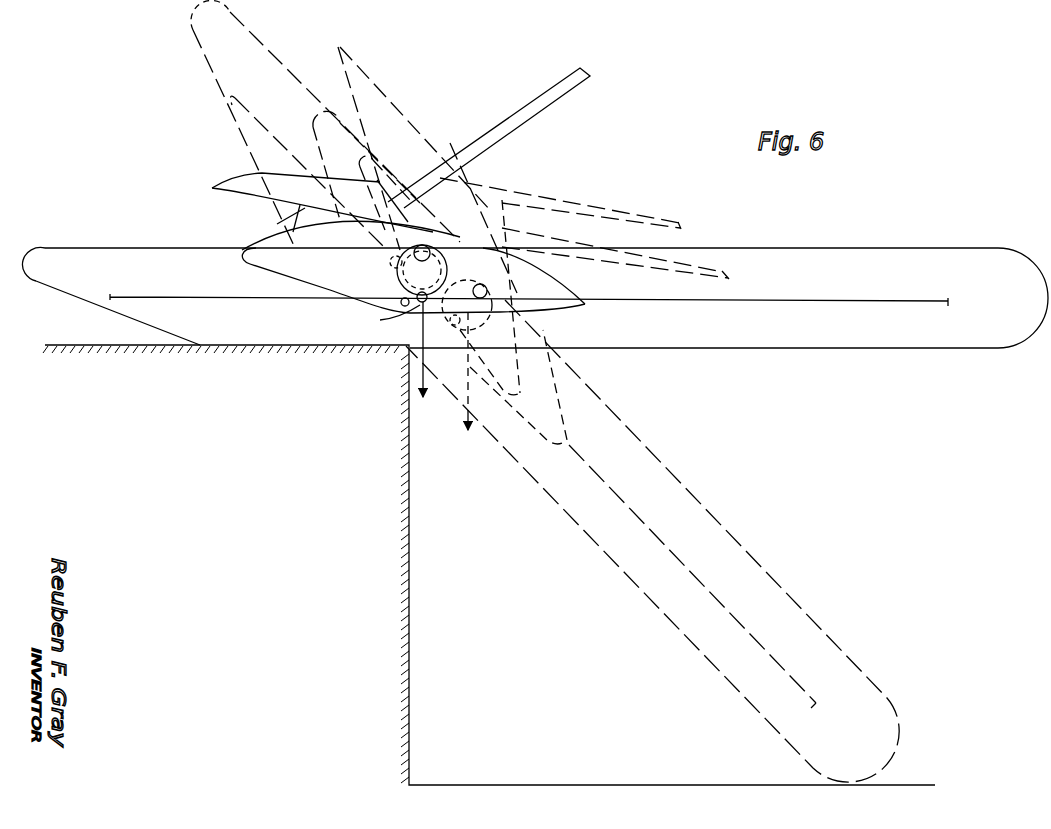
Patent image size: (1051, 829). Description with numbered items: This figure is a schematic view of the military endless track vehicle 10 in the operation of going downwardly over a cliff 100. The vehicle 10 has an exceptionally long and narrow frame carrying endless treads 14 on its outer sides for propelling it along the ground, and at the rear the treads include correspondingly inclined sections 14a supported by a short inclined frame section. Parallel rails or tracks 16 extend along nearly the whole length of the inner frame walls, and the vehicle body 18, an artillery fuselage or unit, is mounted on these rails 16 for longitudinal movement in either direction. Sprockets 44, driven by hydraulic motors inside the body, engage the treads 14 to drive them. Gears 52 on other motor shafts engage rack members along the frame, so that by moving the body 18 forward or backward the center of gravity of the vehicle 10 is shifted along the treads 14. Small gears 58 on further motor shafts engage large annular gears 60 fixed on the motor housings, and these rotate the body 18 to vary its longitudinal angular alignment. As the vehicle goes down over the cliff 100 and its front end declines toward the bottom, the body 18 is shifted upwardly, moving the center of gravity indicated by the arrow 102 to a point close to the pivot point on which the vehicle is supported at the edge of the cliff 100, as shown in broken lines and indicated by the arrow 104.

The military endless track vehicle 10 is at (868, 352).
The endless treads 14 is at (775, 247).
The inclined sections of the treads 14a is at (86, 300).
The rails or tracks 16 is at (805, 301).
The vehicle body 18 is at (323, 283).
The sprockets 44 is at (392, 265).
The large annular gears 60 is at (492, 272).
The small gears 58 is at (400, 304).
The gears 52 is at (399, 319).
The arrow 104 is at (412, 393).
The arrow 102 is at (467, 432).
The cliff 100 is at (410, 543).